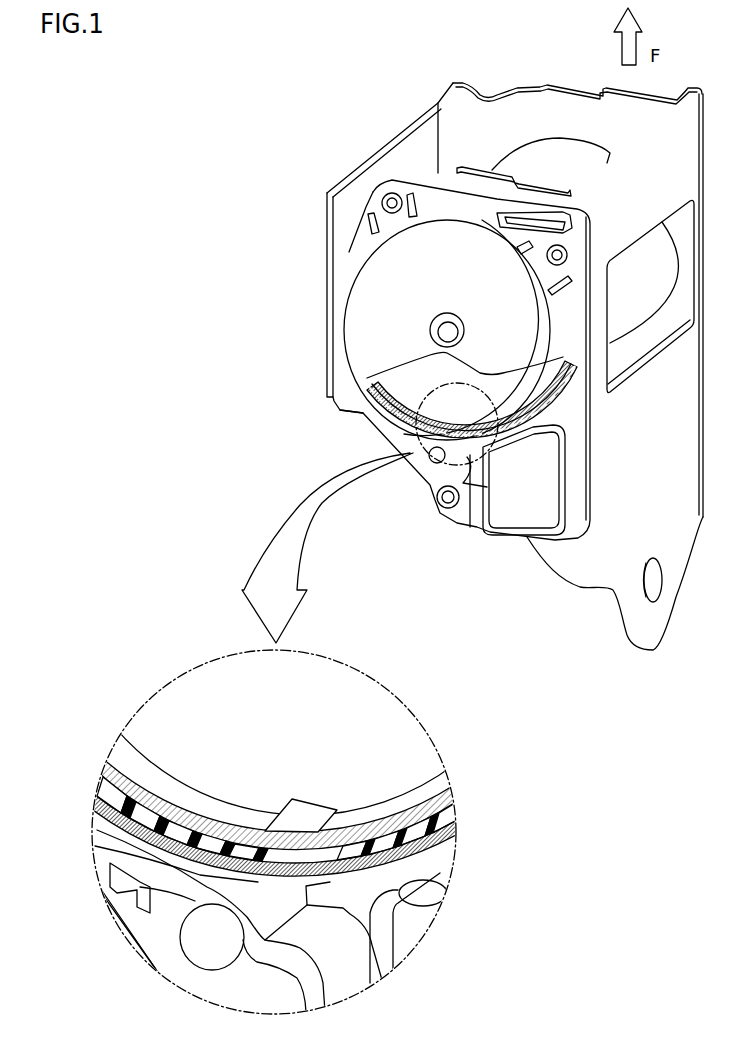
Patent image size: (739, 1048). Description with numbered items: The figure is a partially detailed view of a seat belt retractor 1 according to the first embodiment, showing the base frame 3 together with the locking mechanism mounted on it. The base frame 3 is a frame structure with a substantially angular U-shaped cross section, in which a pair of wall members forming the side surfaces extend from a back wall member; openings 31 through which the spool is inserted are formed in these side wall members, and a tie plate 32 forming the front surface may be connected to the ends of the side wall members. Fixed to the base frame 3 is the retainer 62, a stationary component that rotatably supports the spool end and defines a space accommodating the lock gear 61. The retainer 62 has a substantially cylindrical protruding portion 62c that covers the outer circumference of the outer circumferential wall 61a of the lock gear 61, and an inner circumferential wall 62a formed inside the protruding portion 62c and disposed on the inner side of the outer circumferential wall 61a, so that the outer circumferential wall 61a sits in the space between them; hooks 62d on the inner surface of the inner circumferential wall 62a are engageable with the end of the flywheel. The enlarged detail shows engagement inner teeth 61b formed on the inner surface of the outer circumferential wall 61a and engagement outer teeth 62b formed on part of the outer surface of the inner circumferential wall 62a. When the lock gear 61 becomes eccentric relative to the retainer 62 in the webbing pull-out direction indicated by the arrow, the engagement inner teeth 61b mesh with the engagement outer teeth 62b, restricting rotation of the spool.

The seat belt retractor 1 is at (305, 100).
The base frame 3 is at (658, 431).
The openings 31 is at (527, 131).
The tie plate 32 is at (322, 317).
The lock gear 61 is at (332, 880).
The outer circumferential wall 61a is at (275, 874).
The engagement inner teeth 61b is at (253, 838).
The retainer 62 is at (348, 272).
The inner circumferential wall 62a is at (210, 797).
The engagement outer teeth 62b is at (217, 860).
The protruding portion 62c is at (473, 286).
The hooks 62d is at (313, 806).